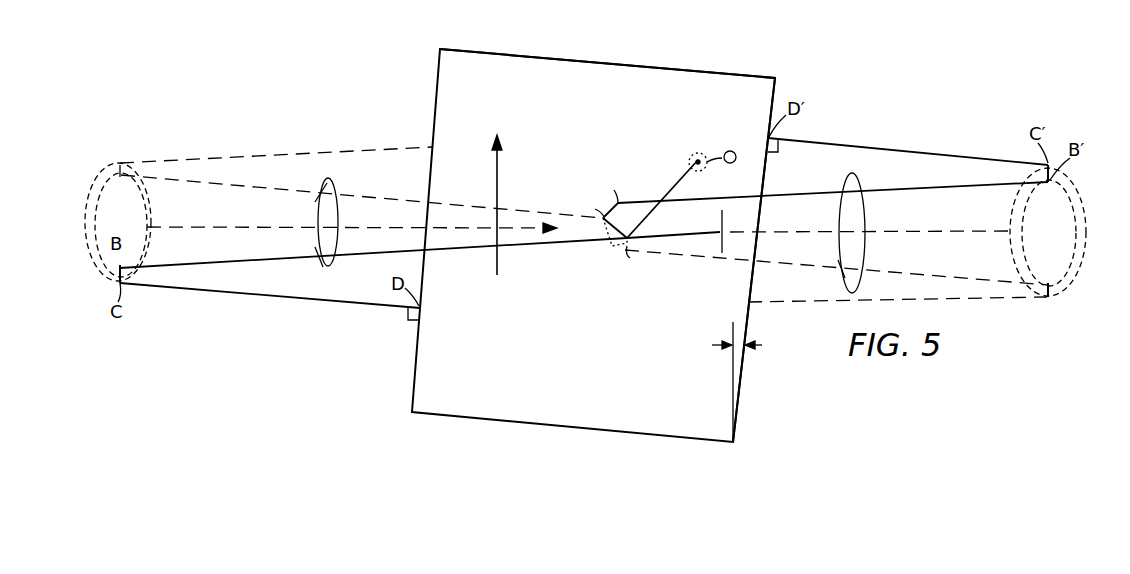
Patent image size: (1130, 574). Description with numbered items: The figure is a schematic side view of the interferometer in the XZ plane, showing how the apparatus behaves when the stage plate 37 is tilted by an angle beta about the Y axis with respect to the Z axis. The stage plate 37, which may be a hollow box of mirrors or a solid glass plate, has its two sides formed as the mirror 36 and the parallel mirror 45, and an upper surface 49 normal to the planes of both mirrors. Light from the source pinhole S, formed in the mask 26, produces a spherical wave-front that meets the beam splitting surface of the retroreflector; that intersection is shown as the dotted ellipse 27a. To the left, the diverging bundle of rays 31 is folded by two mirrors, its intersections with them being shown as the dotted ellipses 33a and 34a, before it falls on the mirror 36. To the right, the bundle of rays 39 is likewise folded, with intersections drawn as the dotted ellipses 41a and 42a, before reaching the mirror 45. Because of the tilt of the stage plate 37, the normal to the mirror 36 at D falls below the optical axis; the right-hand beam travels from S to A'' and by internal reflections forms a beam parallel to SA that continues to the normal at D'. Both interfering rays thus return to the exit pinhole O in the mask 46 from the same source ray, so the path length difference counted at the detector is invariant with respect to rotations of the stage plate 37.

The mirror 36 is at (437, 73).
The upper surface 49 is at (609, 63).
The stage plate 37 is at (570, 119).
The mask 46 is at (700, 153).
The bundle of rays 31 is at (326, 188).
The intersection of beam with mirror 34 34a is at (152, 208).
The intersection of beam with mirror 33 33a is at (146, 243).
The intersection of beam with beam splitting surface 27a is at (603, 242).
The mask 26 is at (722, 253).
The bundle of rays 39 is at (852, 175).
The intersection of beam with mirror 41 41a is at (1080, 200).
The intersection of beam with mirror 42 42a is at (1082, 265).
The mirror 45 is at (740, 416).